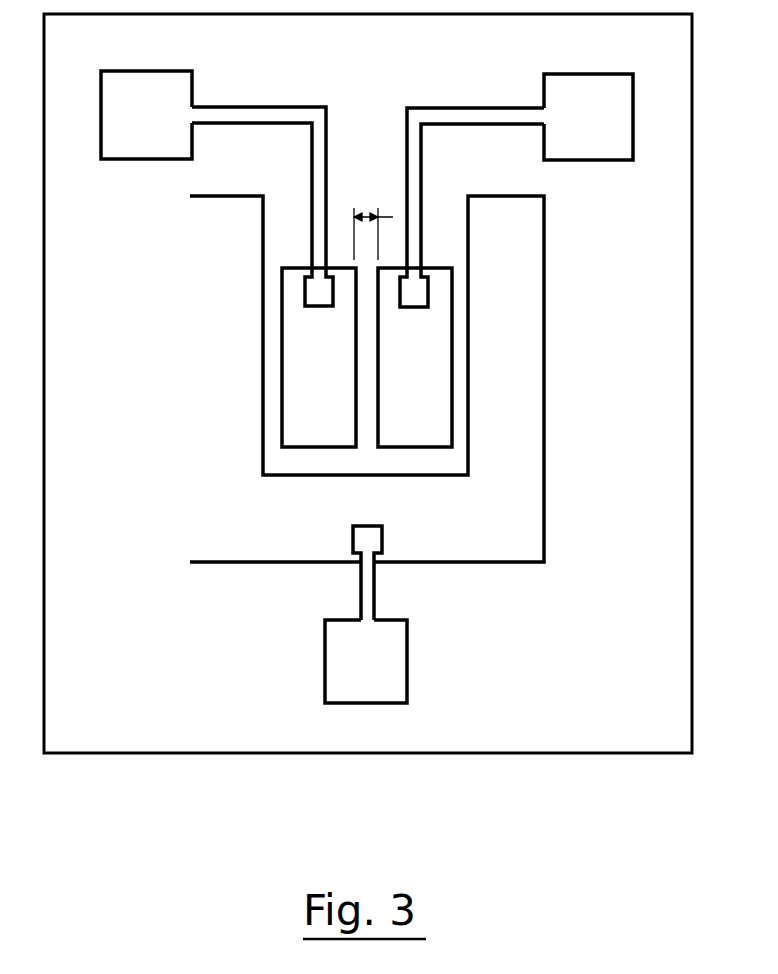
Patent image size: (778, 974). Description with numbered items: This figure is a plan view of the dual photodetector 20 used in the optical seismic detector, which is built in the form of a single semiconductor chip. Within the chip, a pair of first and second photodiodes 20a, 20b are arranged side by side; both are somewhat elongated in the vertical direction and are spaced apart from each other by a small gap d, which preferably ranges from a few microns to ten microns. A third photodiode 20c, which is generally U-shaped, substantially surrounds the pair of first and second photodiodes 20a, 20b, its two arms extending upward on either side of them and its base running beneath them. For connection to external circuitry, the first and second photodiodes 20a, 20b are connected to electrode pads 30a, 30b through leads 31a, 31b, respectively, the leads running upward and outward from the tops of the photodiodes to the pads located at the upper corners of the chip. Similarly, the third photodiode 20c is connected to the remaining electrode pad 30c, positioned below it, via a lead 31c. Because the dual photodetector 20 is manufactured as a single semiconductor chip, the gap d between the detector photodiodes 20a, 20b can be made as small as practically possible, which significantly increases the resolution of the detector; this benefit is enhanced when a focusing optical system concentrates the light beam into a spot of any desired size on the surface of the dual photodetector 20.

The dual photodetector 20 is at (573, 755).
The first photodiode 20a is at (342, 383).
The second photodiode 20b is at (438, 383).
The third photodiode 20c is at (488, 518).
The electrode pad 30a is at (135, 153).
The electrode pad 30b is at (605, 155).
The electrode pad 30c is at (400, 668).
The lead 31a is at (265, 113).
The lead 31b is at (473, 112).
The lead 31c is at (374, 583).
The gap d is at (392, 215).